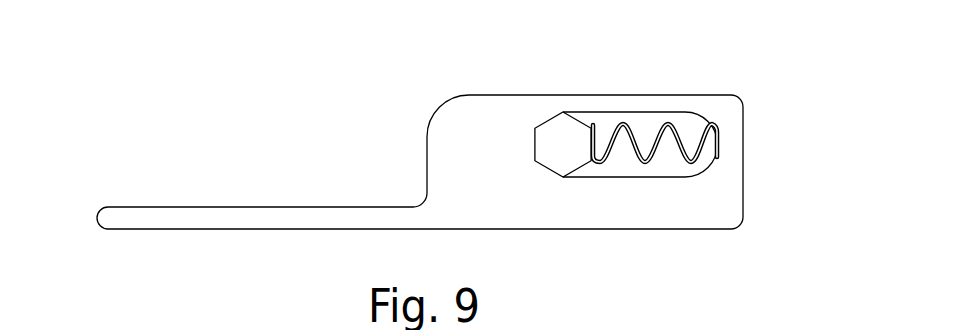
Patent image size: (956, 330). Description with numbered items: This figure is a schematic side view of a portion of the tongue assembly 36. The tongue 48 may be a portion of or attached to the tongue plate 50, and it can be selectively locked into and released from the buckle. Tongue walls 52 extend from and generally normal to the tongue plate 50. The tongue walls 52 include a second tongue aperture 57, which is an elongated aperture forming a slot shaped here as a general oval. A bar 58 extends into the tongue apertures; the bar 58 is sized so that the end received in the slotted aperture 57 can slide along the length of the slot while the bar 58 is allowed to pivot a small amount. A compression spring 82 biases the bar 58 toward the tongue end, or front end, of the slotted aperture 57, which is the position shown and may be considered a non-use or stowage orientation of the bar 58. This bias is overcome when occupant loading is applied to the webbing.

The tongue assembly 36 is at (253, 64).
The tongue 48 is at (140, 206).
The tongue walls 52 is at (510, 95).
The tongue plate 50 is at (567, 230).
The second tongue aperture 57 is at (680, 112).
The bar 58 is at (557, 117).
The compression spring 82 is at (662, 147).